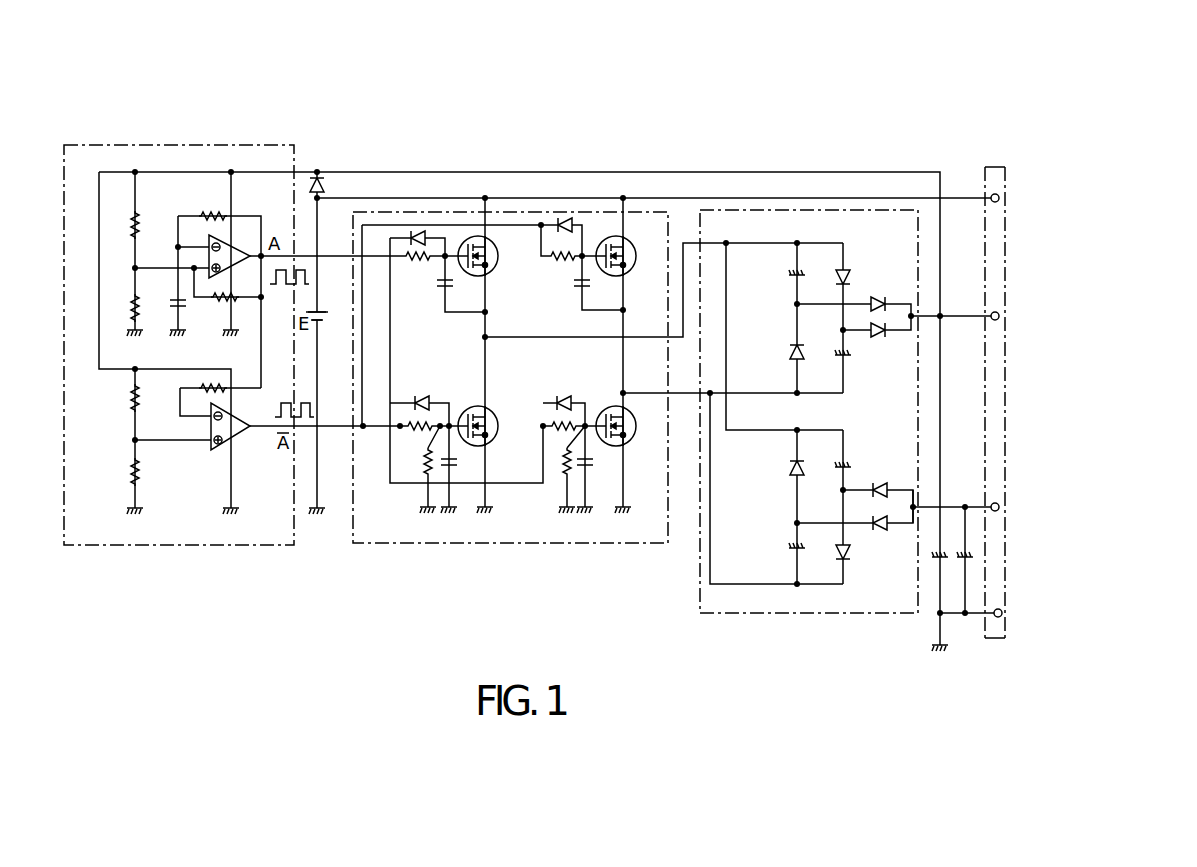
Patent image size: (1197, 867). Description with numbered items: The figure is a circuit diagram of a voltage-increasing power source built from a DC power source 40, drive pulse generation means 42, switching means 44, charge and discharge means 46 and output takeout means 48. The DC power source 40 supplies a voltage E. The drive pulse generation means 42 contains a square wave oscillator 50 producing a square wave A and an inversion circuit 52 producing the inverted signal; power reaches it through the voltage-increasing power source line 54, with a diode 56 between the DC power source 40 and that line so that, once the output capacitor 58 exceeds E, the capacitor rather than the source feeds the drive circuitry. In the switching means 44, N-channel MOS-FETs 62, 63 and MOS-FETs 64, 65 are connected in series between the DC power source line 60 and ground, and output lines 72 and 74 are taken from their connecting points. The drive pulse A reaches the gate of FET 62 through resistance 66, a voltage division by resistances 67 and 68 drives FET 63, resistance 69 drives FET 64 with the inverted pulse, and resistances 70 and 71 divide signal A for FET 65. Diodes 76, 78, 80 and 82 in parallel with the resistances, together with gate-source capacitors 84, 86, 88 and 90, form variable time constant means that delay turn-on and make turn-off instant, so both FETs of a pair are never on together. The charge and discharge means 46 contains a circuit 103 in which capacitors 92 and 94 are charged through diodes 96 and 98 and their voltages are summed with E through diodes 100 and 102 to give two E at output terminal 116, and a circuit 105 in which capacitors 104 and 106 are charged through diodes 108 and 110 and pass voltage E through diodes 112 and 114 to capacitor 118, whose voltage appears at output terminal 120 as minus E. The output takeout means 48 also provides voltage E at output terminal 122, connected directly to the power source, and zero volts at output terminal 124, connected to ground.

The DC power source 40 is at (325, 307).
The drive pulse generation means 42 is at (92, 145).
The switching means 44 is at (430, 543).
The charge and discharge means 46 is at (767, 615).
The output takeout means 48 is at (1008, 563).
The square wave oscillator 50 is at (240, 210).
The inversion circuit 52 is at (205, 466).
The voltage-increasing power source line 54 is at (380, 173).
The diode 56 is at (325, 183).
The output capacitor 58 is at (950, 550).
The DC power source line 60 is at (463, 197).
The N-channel MOS-FET 62 is at (498, 256).
The N-channel MOS-FET 63 is at (494, 416).
The N-channel MOS-FET 64 is at (611, 274).
The N-channel MOS-FET 65 is at (612, 406).
The resistance 66 is at (418, 263).
The resistance 67 is at (432, 421).
The resistance 68 is at (426, 468).
The resistance 69 is at (557, 262).
The resistance 70 is at (556, 431).
The resistance 71 is at (566, 476).
The output line 72 is at (683, 243).
The output line 74 is at (686, 395).
The diode 76 is at (415, 236).
The diode 78 is at (420, 401).
The diode 80 is at (563, 220).
The diode 82 is at (566, 401).
The capacitor 84 is at (442, 292).
The capacitor 86 is at (455, 462).
The capacitor 88 is at (584, 290).
The capacitor 90 is at (588, 467).
The capacitor 92 is at (791, 275).
The capacitor 94 is at (848, 360).
The diode 96 is at (790, 355).
The diode 98 is at (851, 279).
The diode 100 is at (881, 305).
The diode 102 is at (881, 340).
The circuit 103 is at (861, 246).
The capacitor 104 is at (792, 547).
The circuit 105 is at (859, 431).
The capacitor 106 is at (855, 464).
The diode 108 is at (790, 470).
The diode 110 is at (850, 556).
The diode 112 is at (881, 489).
The diode 114 is at (881, 528).
The output terminal 116 is at (999, 312).
The capacitor 118 is at (977, 548).
The output terminal 120 is at (1000, 504).
The output terminal 122 is at (998, 193).
The output terminal 124 is at (1002, 622).